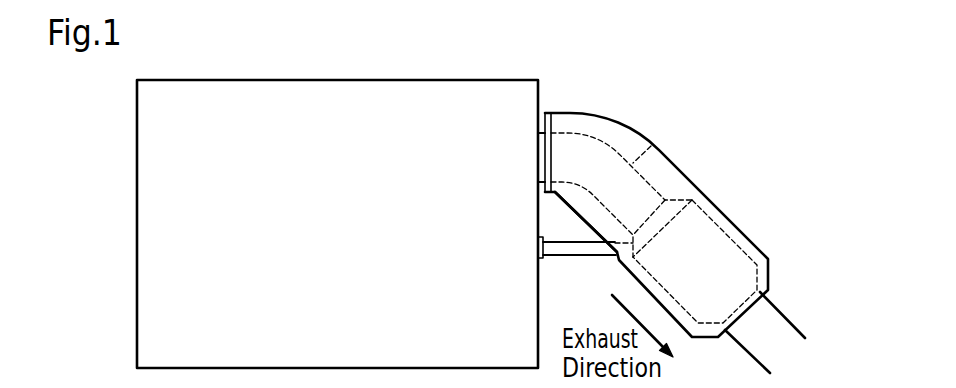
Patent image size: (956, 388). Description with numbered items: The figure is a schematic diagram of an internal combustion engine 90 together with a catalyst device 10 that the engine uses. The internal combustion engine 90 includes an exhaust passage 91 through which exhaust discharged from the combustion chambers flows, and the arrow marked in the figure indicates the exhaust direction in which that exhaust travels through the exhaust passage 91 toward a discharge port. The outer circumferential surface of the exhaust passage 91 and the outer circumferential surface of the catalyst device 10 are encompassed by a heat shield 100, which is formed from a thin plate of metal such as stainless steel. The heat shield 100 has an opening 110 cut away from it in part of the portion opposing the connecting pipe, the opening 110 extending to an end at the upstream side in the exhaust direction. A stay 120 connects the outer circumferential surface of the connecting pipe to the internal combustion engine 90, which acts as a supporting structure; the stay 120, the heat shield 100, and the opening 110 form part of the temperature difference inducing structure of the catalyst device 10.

The internal combustion engine 90 is at (562, 82).
The exhaust passage 91 is at (651, 141).
The catalyst device 10 is at (719, 205).
The heat shield 100 is at (745, 236).
The opening 110 is at (580, 216).
The stay 120 is at (577, 256).